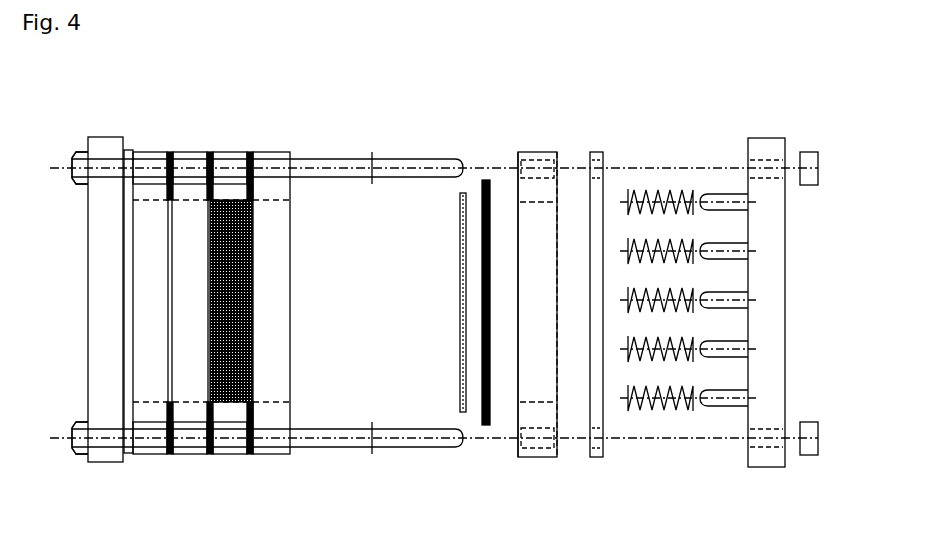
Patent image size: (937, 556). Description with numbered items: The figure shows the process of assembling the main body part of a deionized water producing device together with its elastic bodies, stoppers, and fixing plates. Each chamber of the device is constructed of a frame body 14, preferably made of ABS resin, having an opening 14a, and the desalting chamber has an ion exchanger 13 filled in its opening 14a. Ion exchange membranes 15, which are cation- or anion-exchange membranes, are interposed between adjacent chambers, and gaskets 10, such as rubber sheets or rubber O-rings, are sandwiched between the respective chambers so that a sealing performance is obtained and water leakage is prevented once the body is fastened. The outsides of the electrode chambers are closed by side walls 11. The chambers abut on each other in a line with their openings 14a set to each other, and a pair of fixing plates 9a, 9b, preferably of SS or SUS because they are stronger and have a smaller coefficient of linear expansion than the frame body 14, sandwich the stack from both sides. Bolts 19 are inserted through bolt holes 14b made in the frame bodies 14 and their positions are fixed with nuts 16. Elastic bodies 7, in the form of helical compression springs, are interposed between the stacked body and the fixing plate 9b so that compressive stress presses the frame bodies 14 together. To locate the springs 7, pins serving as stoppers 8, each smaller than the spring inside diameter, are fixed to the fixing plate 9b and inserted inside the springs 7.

The elastic body 7 is at (667, 193).
The stopper 8 is at (739, 293).
The fixing plate 9a is at (108, 462).
The fixing plate 9b is at (767, 467).
The gasket 10 is at (250, 177).
The side wall 11 is at (128, 150).
The ion exchanger 13 is at (207, 397).
The frame body 14 is at (531, 254).
The opening 14a is at (557, 200).
The bolt hole 14b is at (517, 172).
The ion exchange membrane 15 is at (208, 295).
The nut 16 is at (73, 183).
The bolt 19 is at (330, 159).